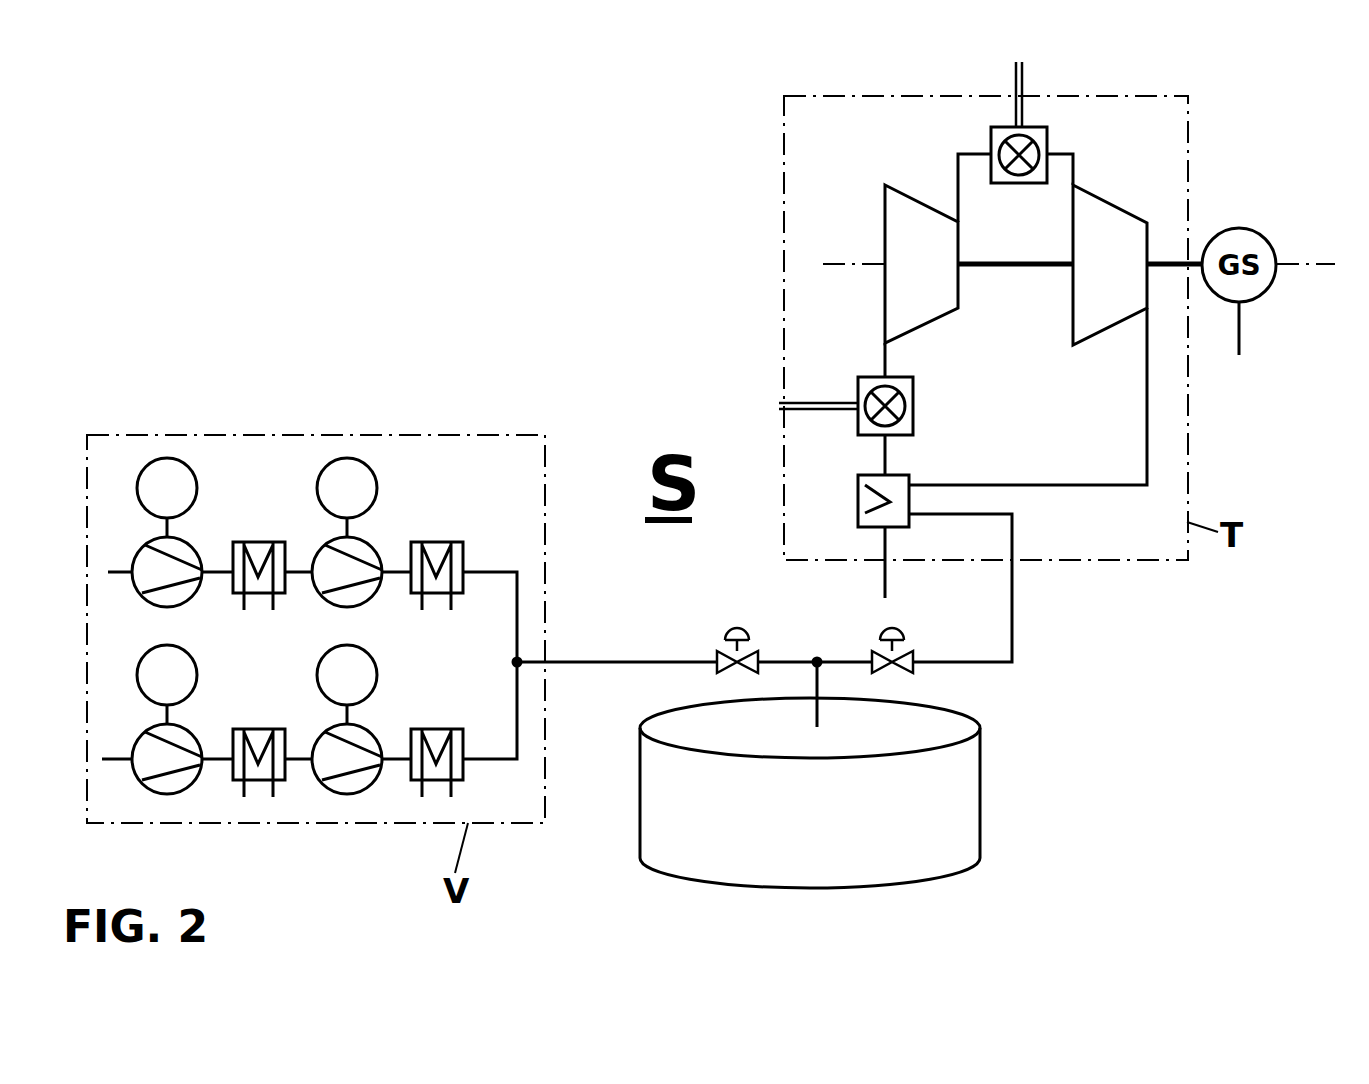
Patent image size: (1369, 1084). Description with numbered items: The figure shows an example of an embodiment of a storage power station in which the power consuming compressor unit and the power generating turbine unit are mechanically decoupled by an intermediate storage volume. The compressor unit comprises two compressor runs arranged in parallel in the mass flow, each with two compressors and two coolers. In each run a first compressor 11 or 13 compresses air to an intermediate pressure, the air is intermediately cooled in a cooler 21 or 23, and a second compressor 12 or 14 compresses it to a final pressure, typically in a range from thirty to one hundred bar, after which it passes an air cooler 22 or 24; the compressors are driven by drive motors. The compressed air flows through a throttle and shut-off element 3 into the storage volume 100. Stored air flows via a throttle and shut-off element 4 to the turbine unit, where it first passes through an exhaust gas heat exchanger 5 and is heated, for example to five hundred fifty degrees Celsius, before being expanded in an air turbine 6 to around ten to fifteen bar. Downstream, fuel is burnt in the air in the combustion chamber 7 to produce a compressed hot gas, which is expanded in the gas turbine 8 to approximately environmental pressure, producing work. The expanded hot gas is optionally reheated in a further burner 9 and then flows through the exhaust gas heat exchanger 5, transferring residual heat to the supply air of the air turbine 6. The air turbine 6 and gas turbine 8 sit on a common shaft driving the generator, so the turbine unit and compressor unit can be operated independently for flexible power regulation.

The throttle and shut-off element 3 is at (718, 665).
The throttle and shut-off element 4 is at (908, 667).
The exhaust gas heat exchanger 5 is at (857, 477).
The air turbine 6 is at (1094, 282).
The combustion chamber 7 is at (1047, 140).
The gas turbine 8 is at (904, 282).
The further burner 9 is at (857, 382).
The first compressor 11 is at (190, 547).
The second compressor 12 is at (372, 547).
The first compressor 13 is at (190, 734).
The second compressor 14 is at (372, 734).
The cooler 21 is at (262, 543).
The air cooler 22 is at (442, 543).
The cooler 23 is at (262, 730).
The air cooler 24 is at (442, 730).
The storage volume 100 is at (775, 845).